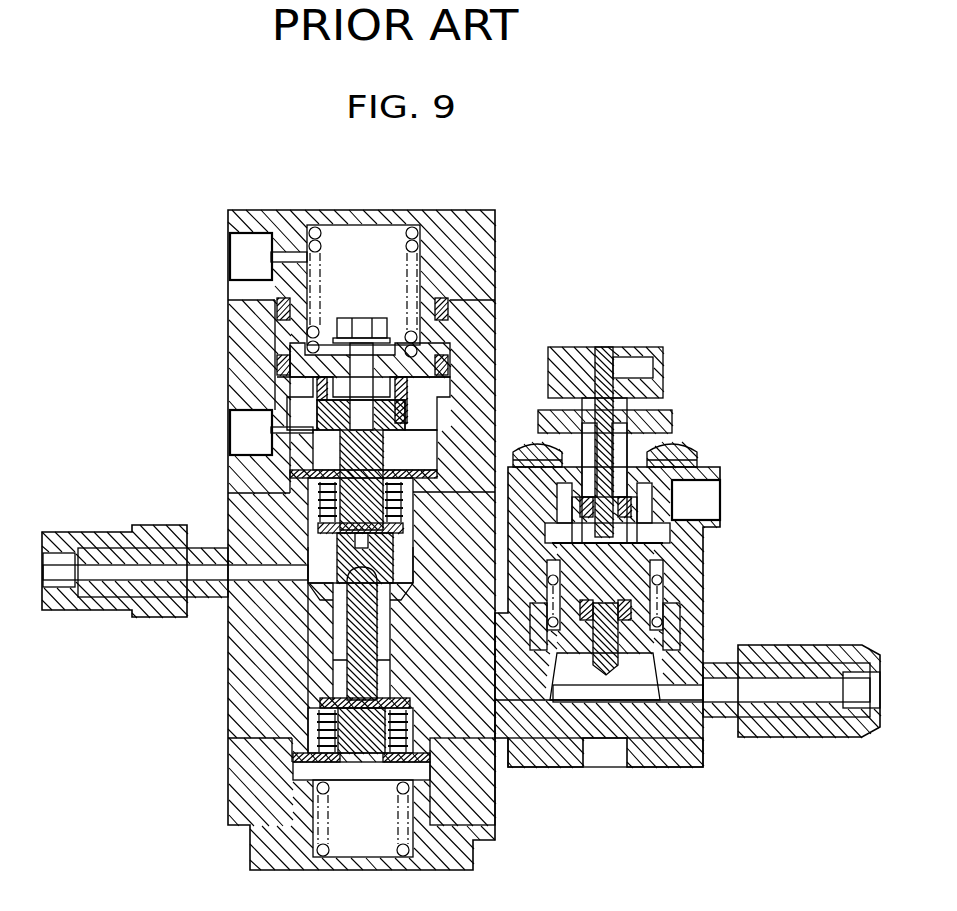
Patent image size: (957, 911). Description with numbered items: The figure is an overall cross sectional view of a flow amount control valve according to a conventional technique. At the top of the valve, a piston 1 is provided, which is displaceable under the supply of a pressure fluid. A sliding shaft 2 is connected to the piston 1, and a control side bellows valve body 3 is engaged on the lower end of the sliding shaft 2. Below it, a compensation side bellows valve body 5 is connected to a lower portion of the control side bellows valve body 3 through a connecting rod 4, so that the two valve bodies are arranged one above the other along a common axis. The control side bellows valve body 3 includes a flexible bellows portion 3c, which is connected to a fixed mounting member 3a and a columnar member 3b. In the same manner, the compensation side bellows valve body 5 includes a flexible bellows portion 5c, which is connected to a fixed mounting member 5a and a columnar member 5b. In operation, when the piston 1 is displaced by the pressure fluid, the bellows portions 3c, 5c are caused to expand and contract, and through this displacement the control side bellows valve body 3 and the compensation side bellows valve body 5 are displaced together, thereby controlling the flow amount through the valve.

The piston 1 is at (288, 350).
The sliding shaft 2 is at (337, 420).
The control side bellows valve body 3 is at (310, 531).
The fixed mounting member 3a is at (293, 477).
The columnar member 3b is at (312, 550).
The flexible bellows portion 3c is at (315, 527).
The connecting rod 4 is at (355, 658).
The compensation side bellows valve body 5 is at (352, 628).
The fixed mounting member 5a is at (295, 752).
The columnar member 5b is at (326, 680).
The flexible bellows portion 5c is at (317, 743).